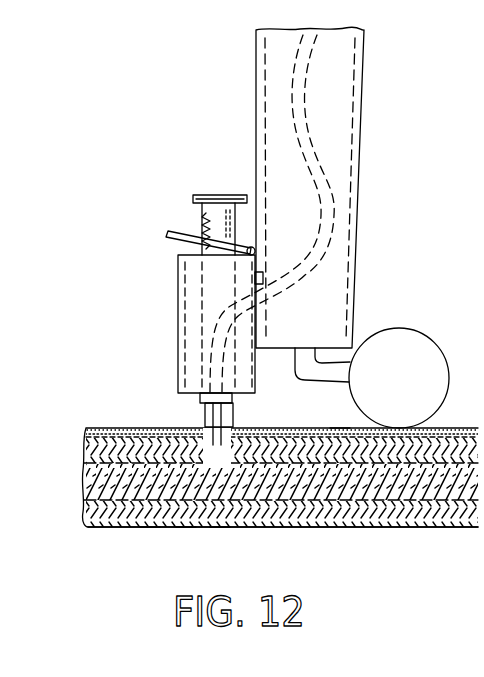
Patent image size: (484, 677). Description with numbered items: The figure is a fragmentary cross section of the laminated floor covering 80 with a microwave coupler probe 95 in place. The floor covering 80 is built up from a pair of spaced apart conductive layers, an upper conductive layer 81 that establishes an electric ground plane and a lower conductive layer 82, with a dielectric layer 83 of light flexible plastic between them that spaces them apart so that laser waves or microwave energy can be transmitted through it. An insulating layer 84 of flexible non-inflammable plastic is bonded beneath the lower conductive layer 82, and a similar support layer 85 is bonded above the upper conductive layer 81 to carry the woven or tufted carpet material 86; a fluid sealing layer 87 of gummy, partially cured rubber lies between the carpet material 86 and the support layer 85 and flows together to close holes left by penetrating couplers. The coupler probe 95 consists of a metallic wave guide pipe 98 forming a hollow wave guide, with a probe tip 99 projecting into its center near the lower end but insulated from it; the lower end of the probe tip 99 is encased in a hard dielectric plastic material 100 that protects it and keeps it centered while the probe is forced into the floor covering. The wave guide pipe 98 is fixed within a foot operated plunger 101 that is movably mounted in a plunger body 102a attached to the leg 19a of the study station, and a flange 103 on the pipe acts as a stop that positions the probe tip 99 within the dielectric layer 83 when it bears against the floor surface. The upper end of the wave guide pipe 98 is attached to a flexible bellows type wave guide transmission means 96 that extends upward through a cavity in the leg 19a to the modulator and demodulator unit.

The leg 19a is at (355, 264).
The wave guide transmission means 96 is at (293, 288).
The foot operated plunger 101 is at (195, 196).
The plunger body 102a is at (178, 302).
The laminated floor covering 80 is at (100, 418).
The carpet material 86 is at (84, 430).
The support layer 85 is at (84, 445).
The upper conductive layer 81 is at (84, 465).
The dielectric layer 83 is at (84, 488).
The lower conductive layer 82 is at (84, 508).
The insulating layer 84 is at (84, 527).
The coupler probe 95 is at (198, 410).
The flange 103 is at (236, 426).
The fluid sealing layer 87 is at (340, 428).
The wave guide pipe 98 is at (146, 528).
The probe tip 99 is at (184, 528).
The dielectric plastic material 100 is at (218, 528).